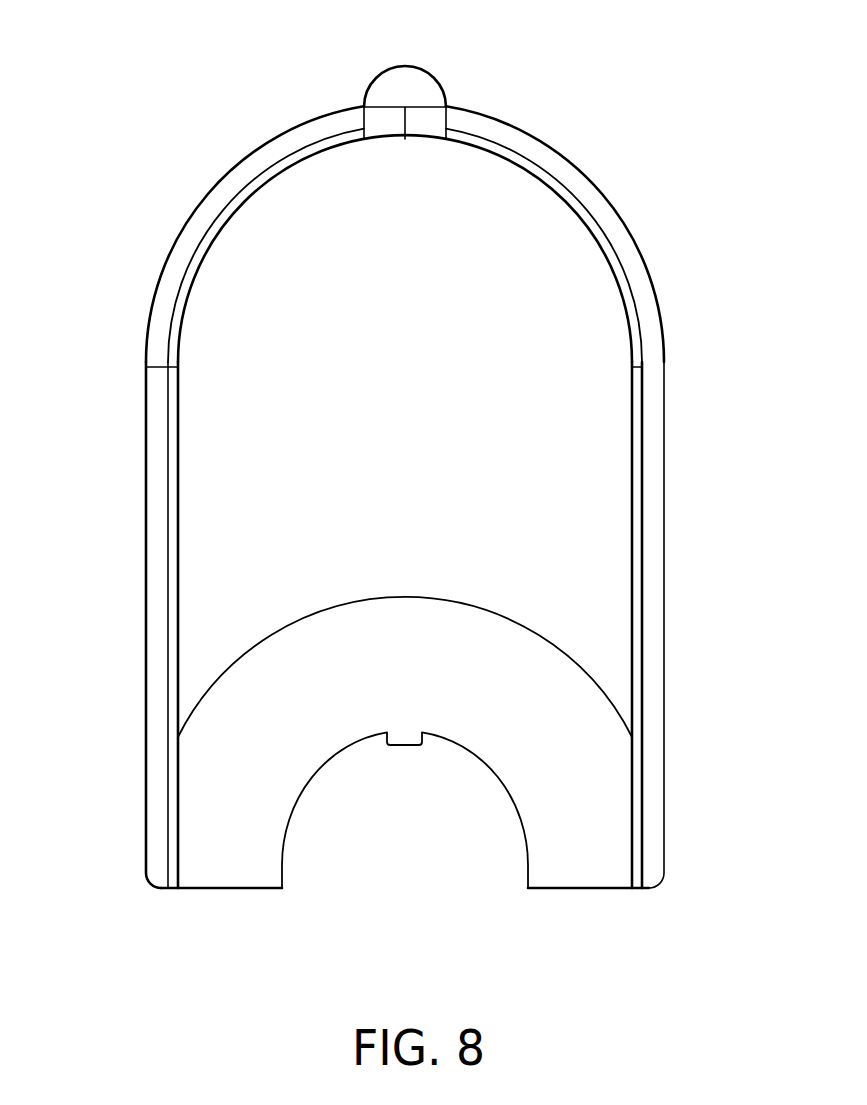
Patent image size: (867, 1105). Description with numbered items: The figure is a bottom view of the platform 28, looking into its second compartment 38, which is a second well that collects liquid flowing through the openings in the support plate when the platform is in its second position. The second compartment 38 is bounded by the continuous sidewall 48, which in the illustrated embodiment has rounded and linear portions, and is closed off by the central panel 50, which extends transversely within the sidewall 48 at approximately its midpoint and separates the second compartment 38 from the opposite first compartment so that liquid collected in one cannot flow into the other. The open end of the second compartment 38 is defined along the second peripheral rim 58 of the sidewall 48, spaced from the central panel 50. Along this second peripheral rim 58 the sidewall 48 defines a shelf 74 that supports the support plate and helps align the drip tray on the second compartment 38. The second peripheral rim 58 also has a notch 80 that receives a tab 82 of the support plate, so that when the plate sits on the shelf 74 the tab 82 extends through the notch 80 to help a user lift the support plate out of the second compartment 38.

The platform 28 is at (170, 104).
The second compartment 38 is at (588, 622).
The sidewall 48 is at (668, 370).
The central panel 50 is at (252, 450).
The second peripheral rim 58 is at (652, 470).
The shelf 74 is at (565, 204).
The notch 80 is at (368, 90).
The tab 82 is at (433, 78).